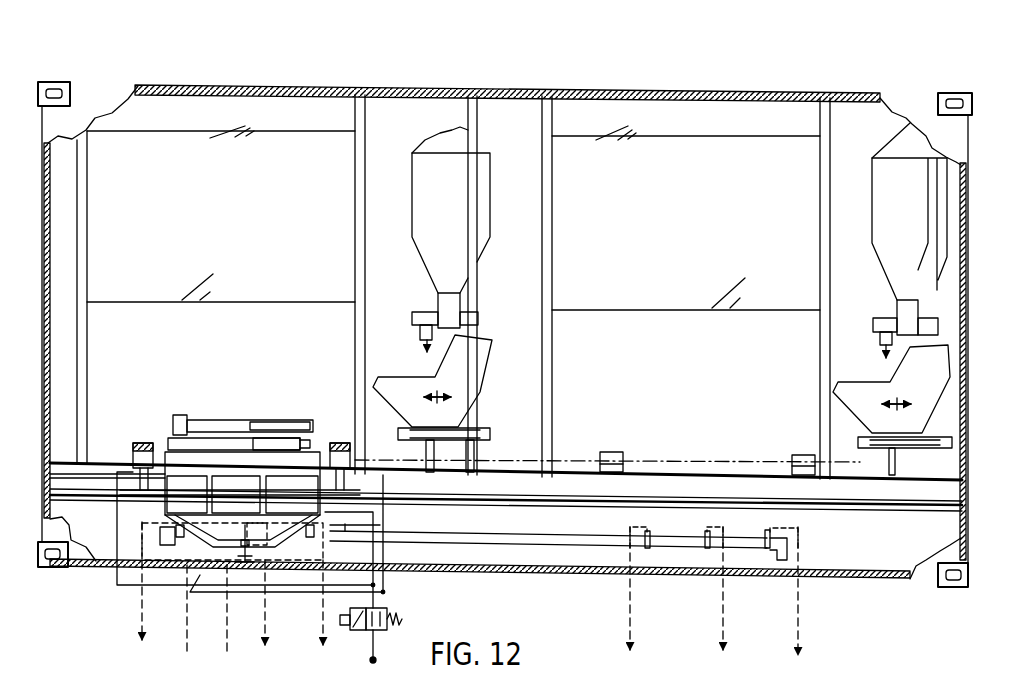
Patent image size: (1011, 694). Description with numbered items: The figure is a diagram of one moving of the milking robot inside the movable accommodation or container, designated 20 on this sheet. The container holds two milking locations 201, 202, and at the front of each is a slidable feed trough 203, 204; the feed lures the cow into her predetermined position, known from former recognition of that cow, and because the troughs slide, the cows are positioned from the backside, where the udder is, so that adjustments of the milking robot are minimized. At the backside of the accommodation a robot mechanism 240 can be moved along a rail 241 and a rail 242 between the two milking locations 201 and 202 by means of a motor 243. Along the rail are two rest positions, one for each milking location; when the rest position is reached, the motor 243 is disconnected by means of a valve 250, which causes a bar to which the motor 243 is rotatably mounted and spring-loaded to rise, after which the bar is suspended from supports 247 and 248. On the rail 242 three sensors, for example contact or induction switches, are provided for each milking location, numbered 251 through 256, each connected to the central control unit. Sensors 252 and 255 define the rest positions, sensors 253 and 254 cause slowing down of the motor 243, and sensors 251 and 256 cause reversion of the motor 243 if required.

The packaging machine 20 is at (978, 121).
The milking location 201 is at (255, 335).
The milking location 202 is at (720, 340).
The feed trough 203 is at (399, 385).
The feed trough 204 is at (866, 390).
The robot mechanism 240 is at (250, 412).
The rail 241 is at (70, 500).
The rail 242 is at (537, 545).
The motor 243 is at (245, 566).
The support 247 is at (143, 443).
The support 248 is at (335, 443).
The valve 250 is at (395, 611).
The sensor 251 is at (187, 523).
The sensor 252 is at (235, 527).
The sensor 253 is at (307, 523).
The sensor 254 is at (656, 549).
The sensor 255 is at (707, 533).
The sensor 256 is at (767, 546).